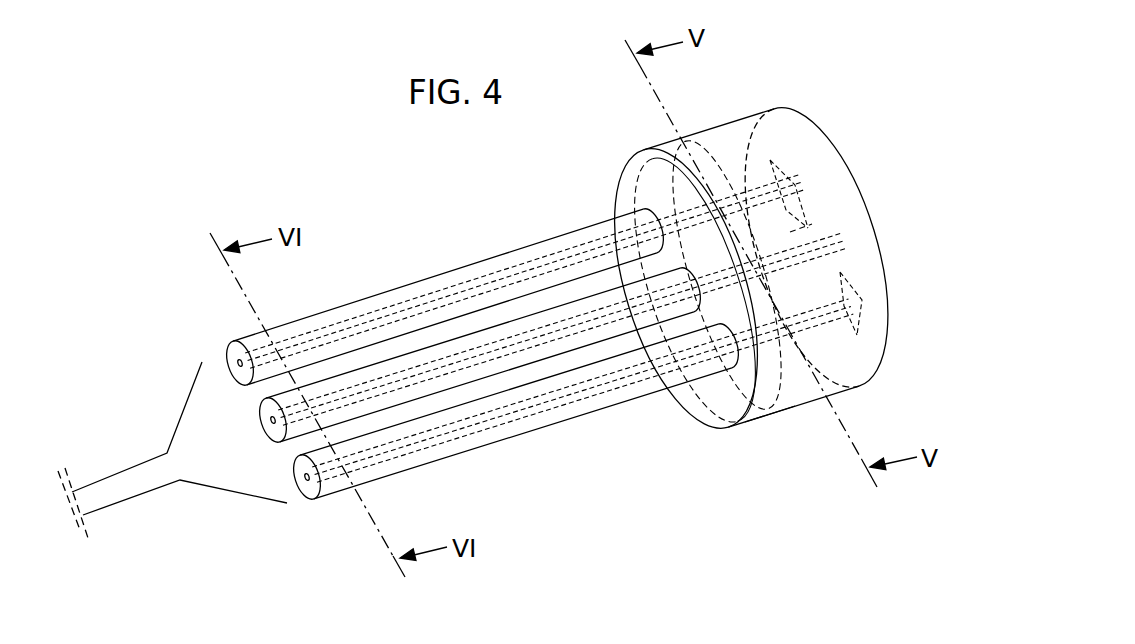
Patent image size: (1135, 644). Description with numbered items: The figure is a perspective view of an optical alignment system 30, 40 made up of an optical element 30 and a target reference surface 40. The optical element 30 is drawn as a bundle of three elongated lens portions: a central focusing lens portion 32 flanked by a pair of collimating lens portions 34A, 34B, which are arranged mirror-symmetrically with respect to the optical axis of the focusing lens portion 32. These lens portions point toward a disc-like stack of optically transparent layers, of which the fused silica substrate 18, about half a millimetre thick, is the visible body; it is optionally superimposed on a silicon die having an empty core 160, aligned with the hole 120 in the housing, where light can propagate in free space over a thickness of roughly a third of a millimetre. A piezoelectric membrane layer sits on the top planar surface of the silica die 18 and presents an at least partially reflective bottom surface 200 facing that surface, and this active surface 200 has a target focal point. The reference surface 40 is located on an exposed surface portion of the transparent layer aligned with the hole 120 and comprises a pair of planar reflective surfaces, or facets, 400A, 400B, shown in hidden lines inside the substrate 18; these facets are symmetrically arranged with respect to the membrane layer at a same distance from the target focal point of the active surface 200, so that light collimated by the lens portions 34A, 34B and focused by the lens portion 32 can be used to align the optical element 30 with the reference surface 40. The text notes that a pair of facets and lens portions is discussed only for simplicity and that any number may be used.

The fused silica substrate 18 is at (850, 367).
The optical element 30 is at (168, 420).
The focusing lens portion 32 is at (510, 315).
The first collimating lens portion 34A is at (419, 275).
The second collimating lens portion 34B is at (561, 432).
The reference surface 40 is at (767, 422).
The hole 120 is at (623, 193).
The empty core 160 is at (733, 157).
The reflective bottom surface 200 is at (812, 224).
The first planar reflective surface 400A is at (797, 182).
The second planar reflective surface 400B is at (848, 280).